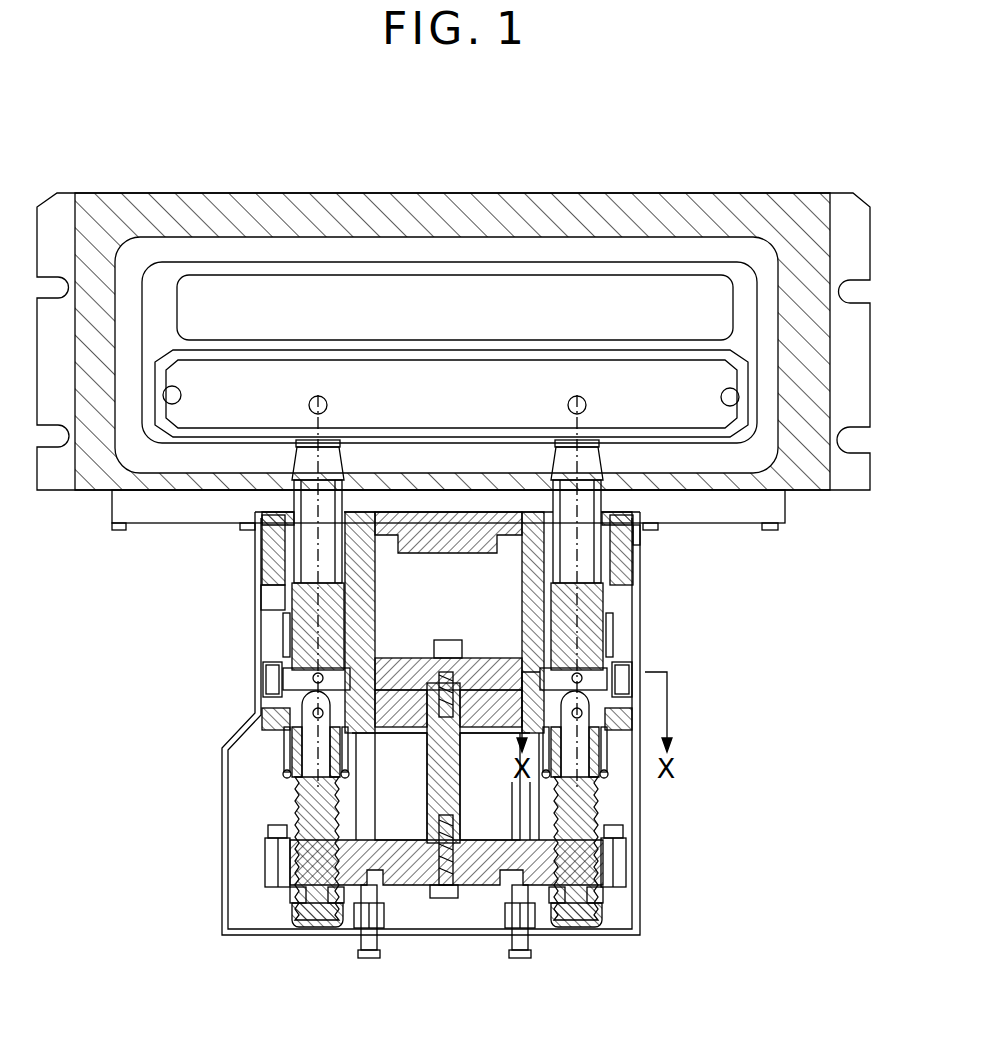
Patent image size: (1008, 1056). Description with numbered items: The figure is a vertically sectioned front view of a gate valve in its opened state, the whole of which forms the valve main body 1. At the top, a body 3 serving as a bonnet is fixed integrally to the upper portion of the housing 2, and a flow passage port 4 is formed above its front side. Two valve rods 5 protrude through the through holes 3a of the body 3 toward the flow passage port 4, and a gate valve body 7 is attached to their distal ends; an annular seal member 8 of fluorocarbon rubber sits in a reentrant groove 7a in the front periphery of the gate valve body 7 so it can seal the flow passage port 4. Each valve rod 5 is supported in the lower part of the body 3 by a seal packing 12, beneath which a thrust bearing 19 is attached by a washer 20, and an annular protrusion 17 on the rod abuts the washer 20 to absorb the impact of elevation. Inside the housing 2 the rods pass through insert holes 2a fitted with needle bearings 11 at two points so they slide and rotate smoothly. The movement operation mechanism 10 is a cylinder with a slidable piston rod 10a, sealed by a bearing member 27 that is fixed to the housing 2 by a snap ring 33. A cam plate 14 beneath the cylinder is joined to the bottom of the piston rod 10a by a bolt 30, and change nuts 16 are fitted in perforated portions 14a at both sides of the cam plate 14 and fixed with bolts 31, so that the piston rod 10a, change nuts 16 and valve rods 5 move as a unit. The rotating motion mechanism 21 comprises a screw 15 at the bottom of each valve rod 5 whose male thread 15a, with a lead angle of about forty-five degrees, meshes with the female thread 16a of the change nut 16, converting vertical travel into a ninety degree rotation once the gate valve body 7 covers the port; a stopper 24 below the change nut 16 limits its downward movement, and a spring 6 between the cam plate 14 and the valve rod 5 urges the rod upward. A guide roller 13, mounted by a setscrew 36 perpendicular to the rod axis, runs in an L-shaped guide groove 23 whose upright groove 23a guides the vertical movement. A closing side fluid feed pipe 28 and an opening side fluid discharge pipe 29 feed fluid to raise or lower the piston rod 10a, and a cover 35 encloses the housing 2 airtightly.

The valve main body 1 is at (648, 618).
The housing 2 is at (643, 587).
The insert hole 2a is at (608, 754).
The body 3 is at (110, 515).
The through holes 3a is at (603, 474).
The flow passage port 4 is at (378, 292).
The valve rods 5 is at (288, 563).
The spring 6 is at (287, 775).
The gate valve body 7 is at (748, 428).
The reentrant groove 7a is at (236, 372).
The annular seal member 8 is at (621, 358).
The movement operation mechanism 10 is at (272, 710).
The piston rod 10a is at (455, 668).
The needle bearings 11 is at (612, 634).
The seal packing 12 is at (252, 528).
The guide roller 13 is at (270, 690).
The cam plate 14 is at (474, 888).
The perforated portions 14a is at (292, 892).
The screw 15 is at (292, 803).
The male thread 15a is at (347, 818).
The change nut 16 is at (343, 888).
The female thread 16a is at (596, 900).
The annular protrusion 17 is at (288, 613).
The thrust bearing 19 is at (623, 513).
The washer 20 is at (636, 538).
The rotating motion mechanism 21 is at (274, 793).
The L-shaped guide groove 23 is at (268, 636).
The upright groove 23a is at (622, 598).
The stopper 24 is at (305, 940).
The bearing member 27 is at (500, 718).
The closing side fluid feed pipe 28 is at (368, 962).
The opening side fluid discharge pipe 29 is at (520, 962).
The bolt 30 is at (440, 900).
The bolts 31 is at (292, 905).
The snap ring 33 is at (380, 735).
The cover 35 is at (640, 886).
The setscrew 36 is at (636, 688).